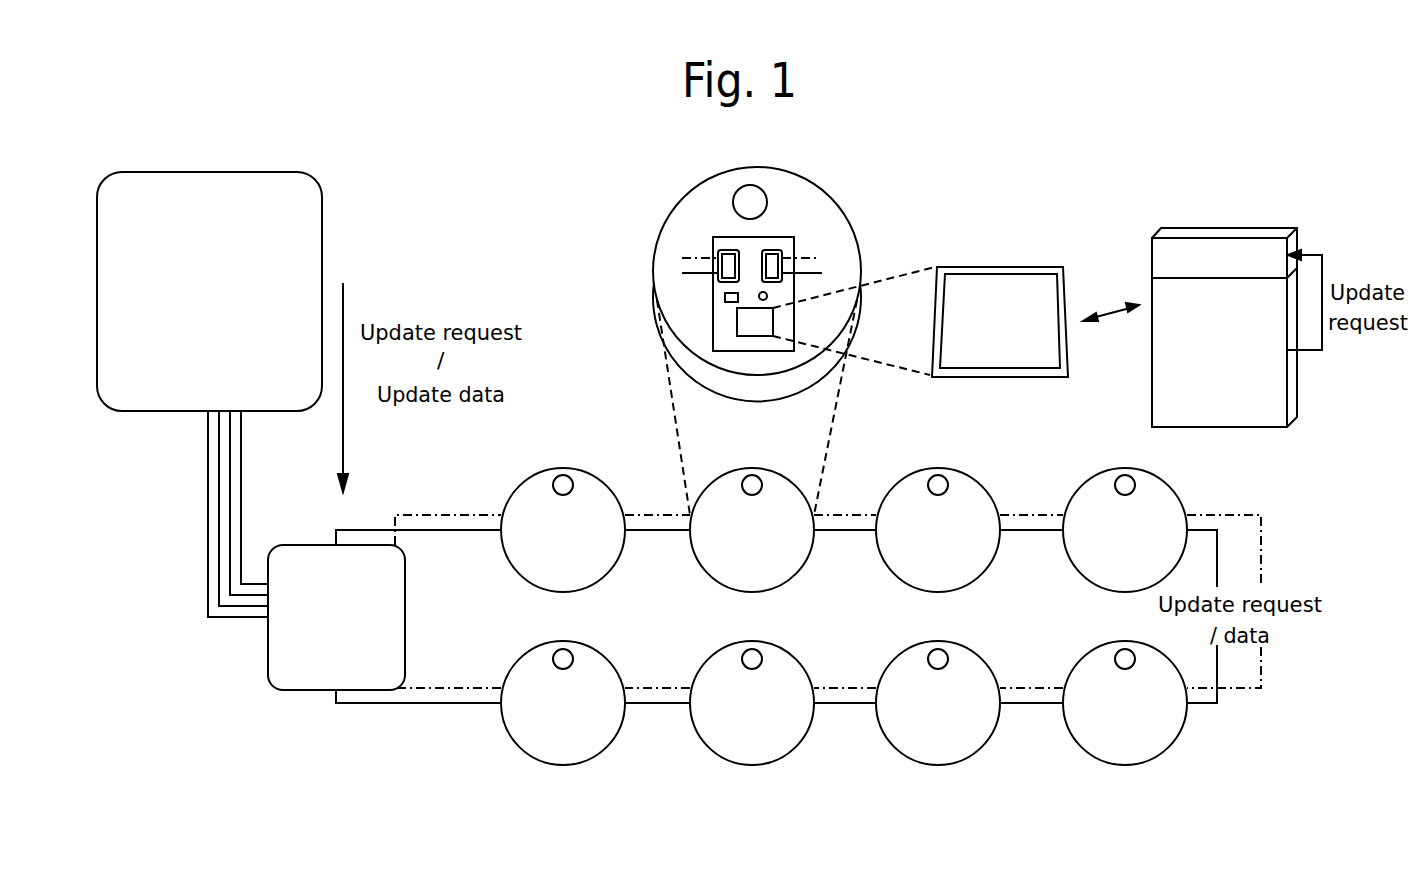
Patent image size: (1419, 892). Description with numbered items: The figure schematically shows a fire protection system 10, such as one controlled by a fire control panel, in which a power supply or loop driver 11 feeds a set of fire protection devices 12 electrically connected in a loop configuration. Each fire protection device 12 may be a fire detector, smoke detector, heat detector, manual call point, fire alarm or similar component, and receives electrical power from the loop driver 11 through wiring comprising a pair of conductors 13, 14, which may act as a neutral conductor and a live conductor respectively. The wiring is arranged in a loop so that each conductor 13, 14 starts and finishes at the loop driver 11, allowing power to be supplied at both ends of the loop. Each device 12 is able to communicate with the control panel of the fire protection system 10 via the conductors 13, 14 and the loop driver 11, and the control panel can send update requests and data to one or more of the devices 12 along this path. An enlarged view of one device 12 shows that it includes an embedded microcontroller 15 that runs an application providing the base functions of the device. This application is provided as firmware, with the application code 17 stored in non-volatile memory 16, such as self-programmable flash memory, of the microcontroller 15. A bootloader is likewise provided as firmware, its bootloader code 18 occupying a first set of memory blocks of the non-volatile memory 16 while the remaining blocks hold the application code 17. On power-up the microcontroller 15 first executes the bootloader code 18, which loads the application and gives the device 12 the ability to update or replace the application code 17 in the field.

The fire protection system 10 is at (150, 411).
The power supply (loop driver) 11 is at (283, 690).
The fire protection device 12 is at (538, 762).
The conductor 13 is at (1261, 672).
The conductor 14 is at (1217, 705).
The embedded microcontroller 15 is at (737, 322).
The non-volatile memory 16 is at (985, 267).
The application code 17 is at (1262, 392).
The bootloader code 18 is at (1213, 238).